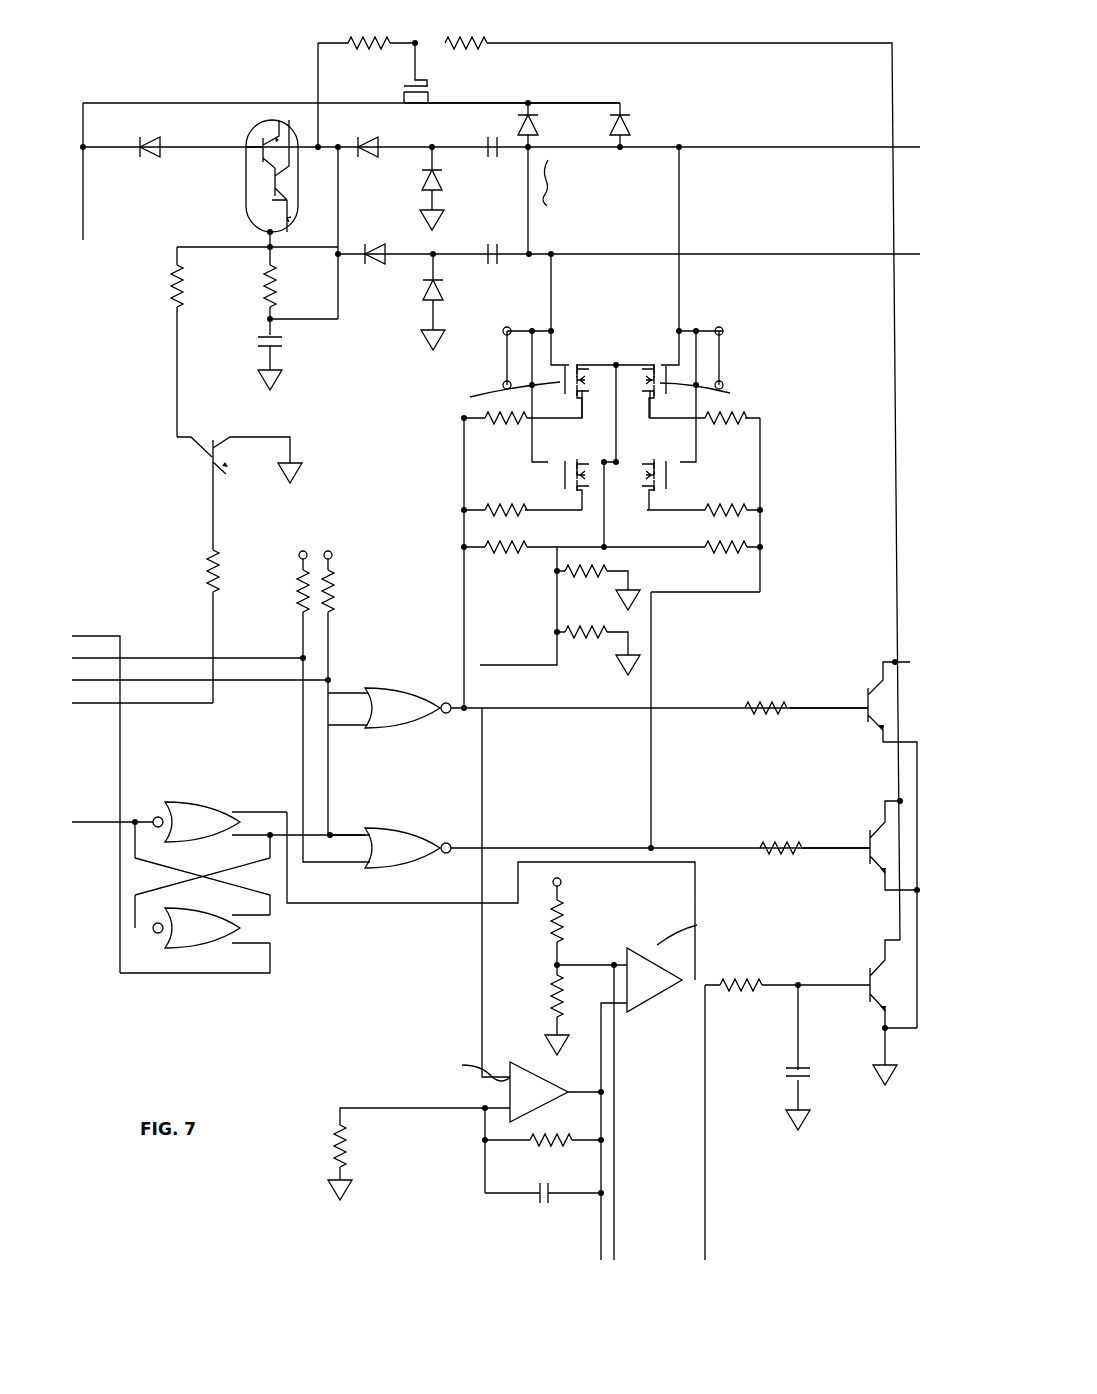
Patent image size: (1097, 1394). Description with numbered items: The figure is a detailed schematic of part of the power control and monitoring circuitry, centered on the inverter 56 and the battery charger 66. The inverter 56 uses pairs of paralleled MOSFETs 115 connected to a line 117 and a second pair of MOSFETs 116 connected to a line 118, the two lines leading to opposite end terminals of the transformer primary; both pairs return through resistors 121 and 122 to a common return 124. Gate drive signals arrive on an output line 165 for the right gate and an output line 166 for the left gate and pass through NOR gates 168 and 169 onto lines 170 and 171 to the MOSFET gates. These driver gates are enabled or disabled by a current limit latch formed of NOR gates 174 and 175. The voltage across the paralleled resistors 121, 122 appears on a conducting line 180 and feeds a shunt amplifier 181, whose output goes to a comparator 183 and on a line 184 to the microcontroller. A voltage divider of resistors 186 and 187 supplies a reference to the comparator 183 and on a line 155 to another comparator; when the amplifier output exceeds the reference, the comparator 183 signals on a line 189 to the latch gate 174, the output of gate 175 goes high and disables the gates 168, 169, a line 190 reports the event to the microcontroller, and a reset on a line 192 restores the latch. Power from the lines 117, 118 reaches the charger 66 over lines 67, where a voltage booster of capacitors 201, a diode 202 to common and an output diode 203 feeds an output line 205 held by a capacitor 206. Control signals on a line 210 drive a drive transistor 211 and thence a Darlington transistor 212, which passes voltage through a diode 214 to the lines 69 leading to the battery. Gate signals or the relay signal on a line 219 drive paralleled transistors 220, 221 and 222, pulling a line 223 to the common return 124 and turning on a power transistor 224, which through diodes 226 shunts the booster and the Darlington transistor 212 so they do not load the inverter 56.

The inverter 56 is at (768, 440).
The battery charger 66 is at (283, 95).
The lines 67 is at (645, 147).
The lines 69 is at (83, 205).
The MOSFETs 115 is at (576, 360).
The MOSFETs 116 is at (655, 362).
The line 117 is at (726, 254).
The line 118 is at (750, 147).
The resistor 121 is at (607, 570).
The resistor 122 is at (595, 615).
The common return 124 is at (651, 634).
The line 155 is at (620, 1104).
The output line 165 is at (178, 647).
The output line 166 is at (278, 695).
The NOR gate 168 is at (429, 823).
The NOR gate 169 is at (420, 688).
The line 170 is at (651, 677).
The line 171 is at (468, 630).
The NOR gate 174 is at (180, 804).
The NOR gate 175 is at (175, 952).
The conducting line 180 is at (491, 754).
The shunt amplifier 181 is at (527, 1068).
The comparator 183 is at (644, 948).
The line 184 is at (602, 1225).
The resistor 186 is at (550, 934).
The resistor 187 is at (548, 990).
The line 189 is at (583, 864).
The line 190 is at (105, 828).
The line 192 is at (197, 974).
The capacitors 201 is at (486, 144).
The diode 202 is at (440, 180).
The output diode 203 is at (375, 143).
The output line 205 is at (234, 333).
The capacitor 206 is at (286, 352).
The line 210 is at (223, 619).
The drive transistor 211 is at (199, 478).
The Darlington transistor 212 is at (255, 133).
The diode 214 is at (140, 147).
The line 219 is at (705, 1150).
The transistor 220 is at (858, 681).
The transistor 221 is at (861, 835).
The transistor 222 is at (865, 966).
The line 223 is at (528, 43).
The power transistor 224 is at (400, 86).
The diodes 226 is at (533, 118).